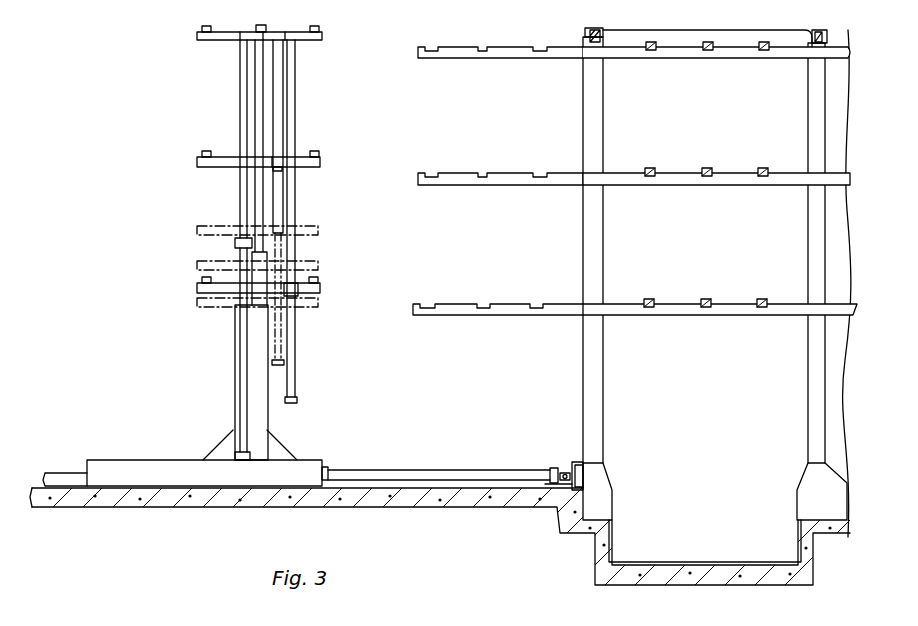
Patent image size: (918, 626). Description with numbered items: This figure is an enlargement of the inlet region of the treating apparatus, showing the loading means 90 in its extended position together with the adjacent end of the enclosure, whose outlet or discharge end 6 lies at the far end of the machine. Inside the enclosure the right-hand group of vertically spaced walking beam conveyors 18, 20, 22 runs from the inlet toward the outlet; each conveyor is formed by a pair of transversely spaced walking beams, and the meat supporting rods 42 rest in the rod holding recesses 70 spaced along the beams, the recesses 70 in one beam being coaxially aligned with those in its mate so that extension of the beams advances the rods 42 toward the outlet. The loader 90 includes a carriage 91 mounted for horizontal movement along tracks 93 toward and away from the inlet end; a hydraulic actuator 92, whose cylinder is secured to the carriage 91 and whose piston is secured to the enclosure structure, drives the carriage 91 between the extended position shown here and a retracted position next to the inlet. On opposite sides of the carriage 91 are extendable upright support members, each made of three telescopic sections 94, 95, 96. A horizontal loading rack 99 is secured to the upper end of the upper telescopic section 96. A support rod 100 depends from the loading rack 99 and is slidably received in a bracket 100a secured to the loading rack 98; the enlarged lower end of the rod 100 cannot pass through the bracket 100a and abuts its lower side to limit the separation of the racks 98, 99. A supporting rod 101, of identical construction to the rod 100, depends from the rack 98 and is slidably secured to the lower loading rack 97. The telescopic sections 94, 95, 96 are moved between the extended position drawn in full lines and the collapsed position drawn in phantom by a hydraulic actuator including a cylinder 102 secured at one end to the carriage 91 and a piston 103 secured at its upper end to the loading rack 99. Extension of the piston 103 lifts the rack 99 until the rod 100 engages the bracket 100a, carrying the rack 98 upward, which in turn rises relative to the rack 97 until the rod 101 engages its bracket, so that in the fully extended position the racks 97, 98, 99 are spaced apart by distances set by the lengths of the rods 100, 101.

The outlet end 6 is at (655, 553).
The walking beam conveyor 18 is at (737, 44).
The walking beam conveyor 20 is at (728, 172).
The walking beam conveyor 22 is at (752, 330).
The meat supporting rods 42 is at (210, 27).
The recesses 70 is at (490, 48).
The loading means 90 is at (210, 428).
The carriage 91 is at (170, 468).
The hydraulic actuator 92 is at (425, 470).
The tracks 93 is at (62, 475).
The telescopic section 94 is at (265, 422).
The telescopic section 95 is at (240, 248).
The telescopic section 96 is at (258, 180).
The lower loading rack 97 is at (322, 293).
The loading rack 98 is at (322, 162).
The loading rack 99 is at (322, 40).
The support rod 100 is at (280, 108).
The bracket 100a is at (281, 160).
The supporting rod 101 is at (295, 205).
The cylinder 102 is at (240, 335).
The piston 103 is at (240, 68).